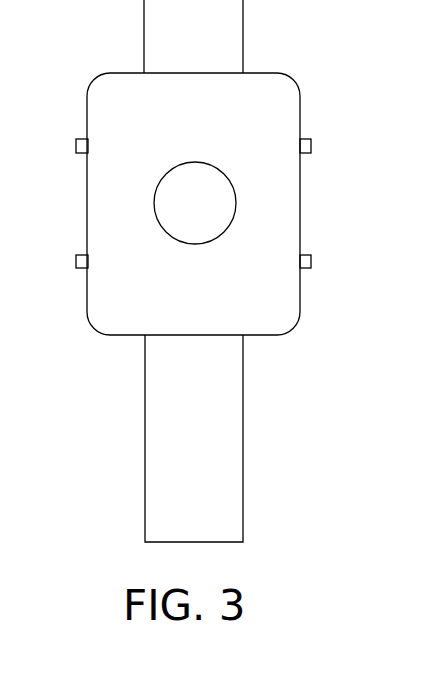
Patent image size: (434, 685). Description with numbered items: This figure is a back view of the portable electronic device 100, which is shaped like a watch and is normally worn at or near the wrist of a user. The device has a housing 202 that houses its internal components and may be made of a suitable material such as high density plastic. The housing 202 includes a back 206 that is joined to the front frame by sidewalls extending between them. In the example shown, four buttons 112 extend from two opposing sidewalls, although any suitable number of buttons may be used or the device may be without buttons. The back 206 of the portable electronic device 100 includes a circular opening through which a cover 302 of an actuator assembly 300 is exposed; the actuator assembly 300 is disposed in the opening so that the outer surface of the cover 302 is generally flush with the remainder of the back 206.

The portable electronic device 100 is at (188, 271).
The housing 202 is at (288, 75).
The back 206 is at (283, 235).
The buttons 112 is at (308, 140).
The actuator assembly 300 is at (152, 202).
The cover 302 is at (175, 218).